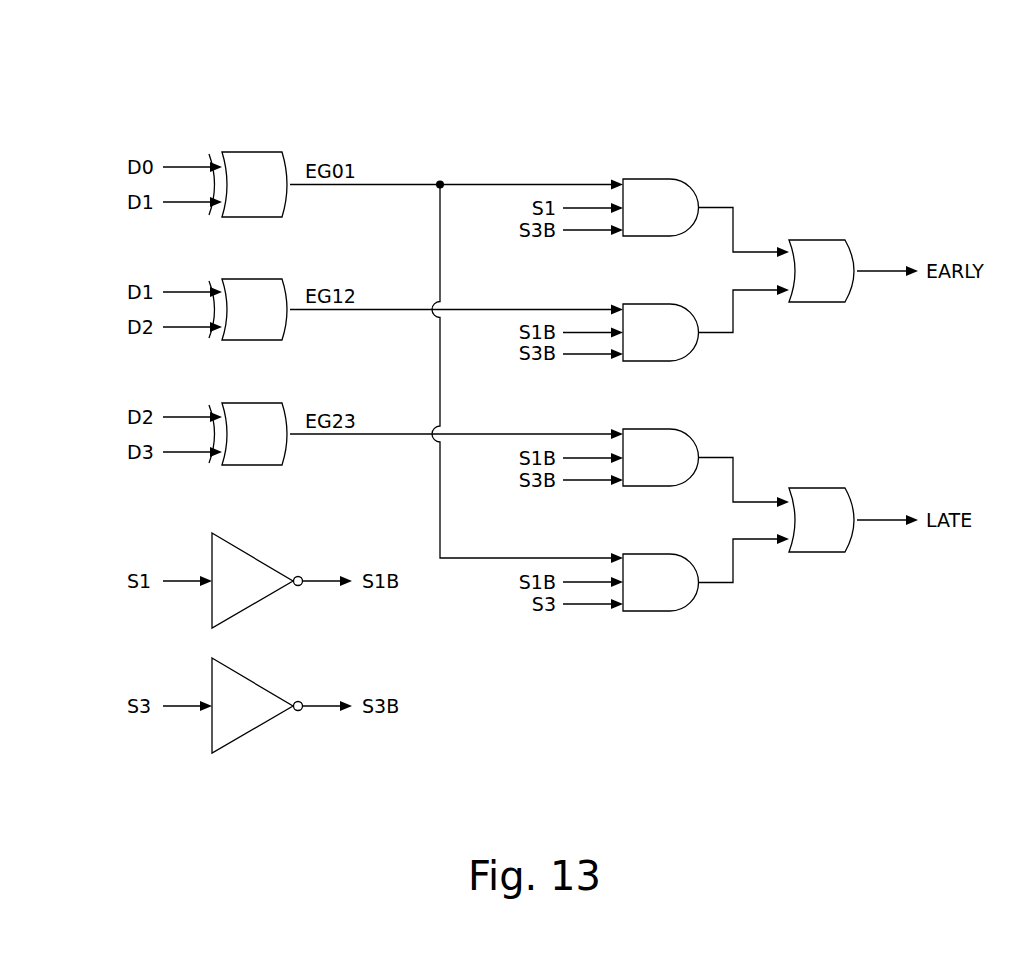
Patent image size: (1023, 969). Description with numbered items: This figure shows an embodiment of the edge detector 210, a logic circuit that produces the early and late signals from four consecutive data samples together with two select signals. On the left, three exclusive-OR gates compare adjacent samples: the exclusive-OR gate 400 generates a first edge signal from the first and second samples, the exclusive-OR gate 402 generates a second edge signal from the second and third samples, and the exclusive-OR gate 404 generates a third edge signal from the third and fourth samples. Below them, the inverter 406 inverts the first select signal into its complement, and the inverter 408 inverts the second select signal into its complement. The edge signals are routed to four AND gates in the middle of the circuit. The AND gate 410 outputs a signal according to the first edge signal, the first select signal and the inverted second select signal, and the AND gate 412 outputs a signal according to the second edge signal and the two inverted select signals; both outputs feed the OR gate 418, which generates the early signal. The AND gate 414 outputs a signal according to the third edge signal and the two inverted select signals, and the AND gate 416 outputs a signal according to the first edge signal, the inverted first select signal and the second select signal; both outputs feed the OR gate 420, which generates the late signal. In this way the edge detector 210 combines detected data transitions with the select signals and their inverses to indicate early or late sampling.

The edge detector 210 is at (916, 97).
The exclusive-OR gate 400 is at (247, 152).
The exclusive-OR gate 402 is at (247, 279).
The exclusive-OR gate 404 is at (247, 403).
The inverter 406 is at (250, 553).
The inverter 408 is at (250, 678).
The AND gate 410 is at (645, 179).
The AND gate 412 is at (645, 304).
The AND gate 414 is at (645, 429).
The AND gate 416 is at (645, 554).
The OR gate 418 is at (815, 240).
The OR gate 420 is at (815, 488).